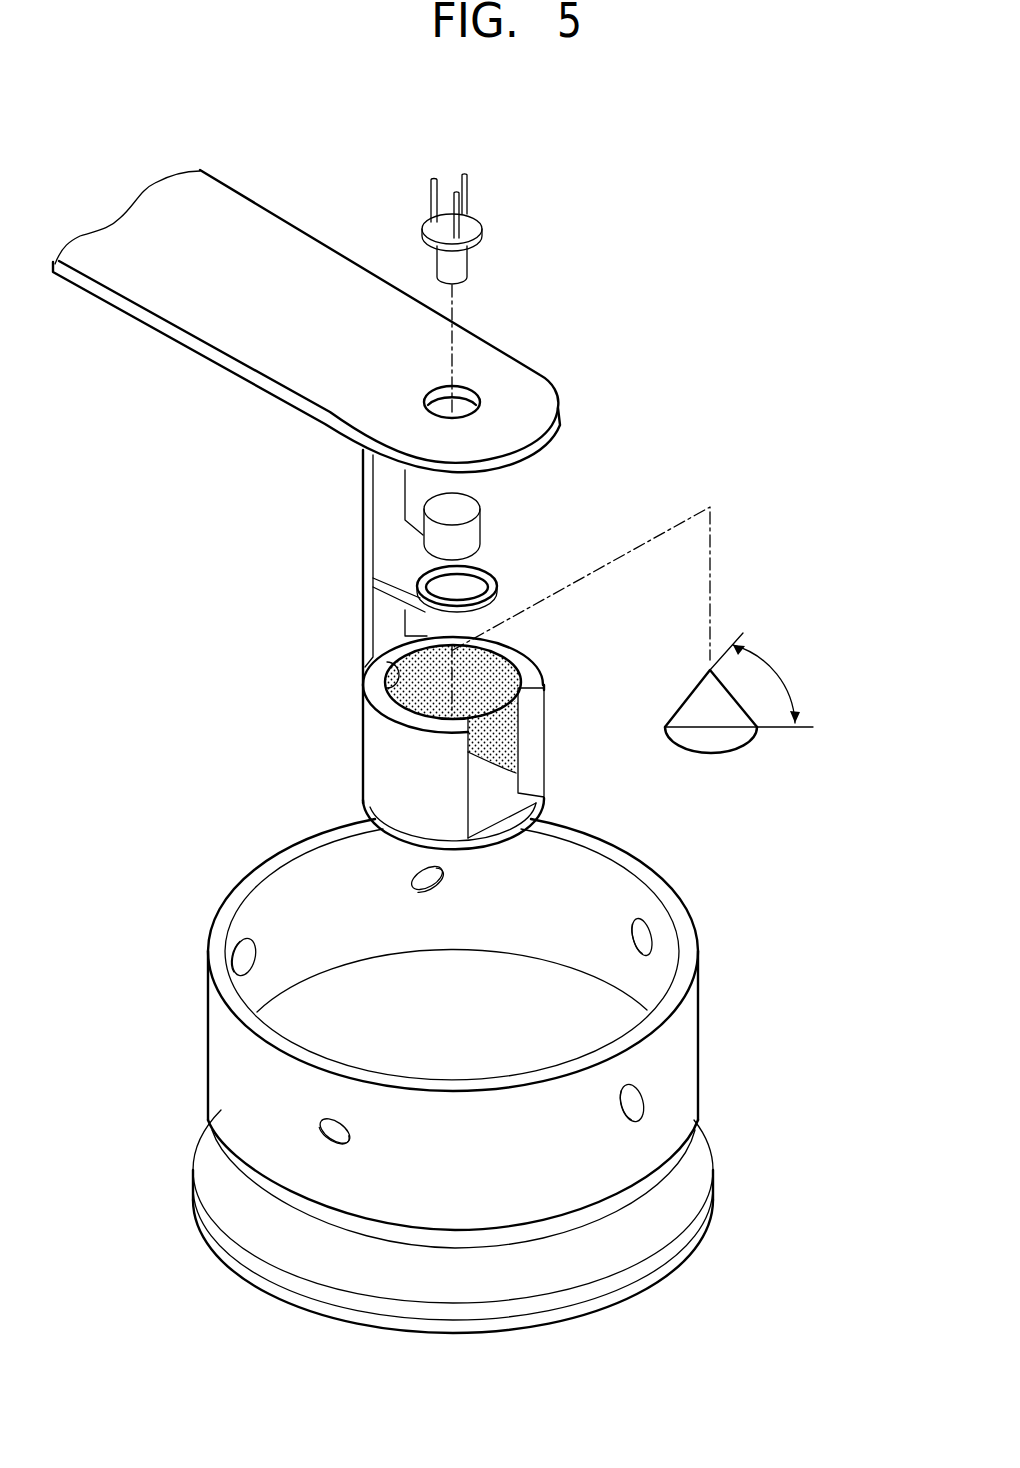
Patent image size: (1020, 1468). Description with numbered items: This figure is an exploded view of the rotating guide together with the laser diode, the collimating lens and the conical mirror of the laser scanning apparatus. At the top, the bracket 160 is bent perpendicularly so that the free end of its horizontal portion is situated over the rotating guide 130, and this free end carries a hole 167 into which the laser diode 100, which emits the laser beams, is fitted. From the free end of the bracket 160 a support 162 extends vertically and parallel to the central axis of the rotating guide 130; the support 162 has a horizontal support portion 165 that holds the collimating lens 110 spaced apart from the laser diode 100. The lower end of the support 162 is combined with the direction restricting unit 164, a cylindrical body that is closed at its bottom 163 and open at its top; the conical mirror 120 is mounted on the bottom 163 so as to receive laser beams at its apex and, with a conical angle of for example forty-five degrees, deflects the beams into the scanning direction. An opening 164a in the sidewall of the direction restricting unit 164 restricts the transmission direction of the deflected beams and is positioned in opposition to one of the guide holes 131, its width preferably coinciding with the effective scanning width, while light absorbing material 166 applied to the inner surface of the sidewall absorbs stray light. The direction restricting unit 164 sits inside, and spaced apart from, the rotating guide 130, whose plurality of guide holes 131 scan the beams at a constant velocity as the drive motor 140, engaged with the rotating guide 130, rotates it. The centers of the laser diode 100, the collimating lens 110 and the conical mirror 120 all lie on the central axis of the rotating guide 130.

The laser diode 100 is at (460, 265).
The collimating lens 110 is at (470, 532).
The conical mirror 120 is at (752, 709).
The rotating guide 130 is at (675, 1025).
The guide holes 131 is at (643, 1103).
The drive motor 140 is at (660, 1190).
The bracket 160 is at (250, 216).
The support 162 is at (382, 505).
The bottom 163 is at (500, 818).
The direction restricting unit 164 is at (523, 662).
The opening 164a is at (487, 720).
The horizontal support portion 165 is at (493, 585).
The light absorbing material 166 is at (384, 688).
The hole 167 is at (460, 407).